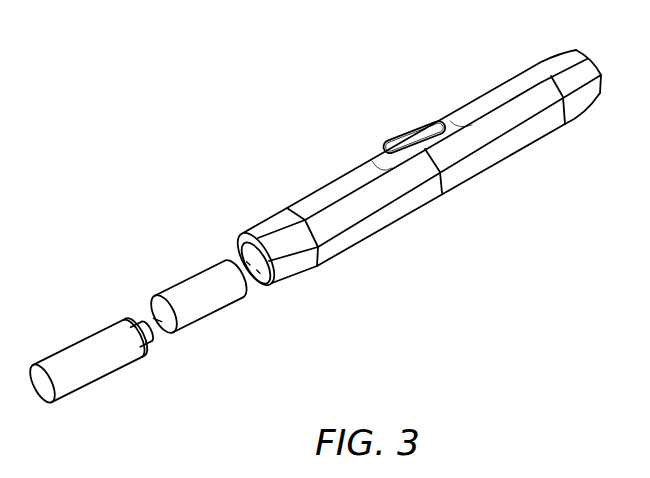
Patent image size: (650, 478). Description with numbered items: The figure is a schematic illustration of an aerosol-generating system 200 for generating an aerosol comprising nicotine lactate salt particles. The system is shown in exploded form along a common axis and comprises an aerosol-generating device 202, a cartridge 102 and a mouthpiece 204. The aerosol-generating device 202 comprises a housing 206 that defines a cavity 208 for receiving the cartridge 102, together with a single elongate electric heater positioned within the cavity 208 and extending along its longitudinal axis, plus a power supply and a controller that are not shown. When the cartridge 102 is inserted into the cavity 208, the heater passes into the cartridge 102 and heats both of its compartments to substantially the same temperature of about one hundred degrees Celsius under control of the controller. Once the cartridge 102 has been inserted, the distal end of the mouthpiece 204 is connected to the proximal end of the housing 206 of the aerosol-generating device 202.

The aerosol-generating system 200 is at (294, 343).
The aerosol-generating device 202 is at (492, 92).
The mouthpiece 204 is at (80, 350).
The cartridge 102 is at (190, 287).
The housing 206 is at (327, 190).
The cavity 208 is at (257, 283).